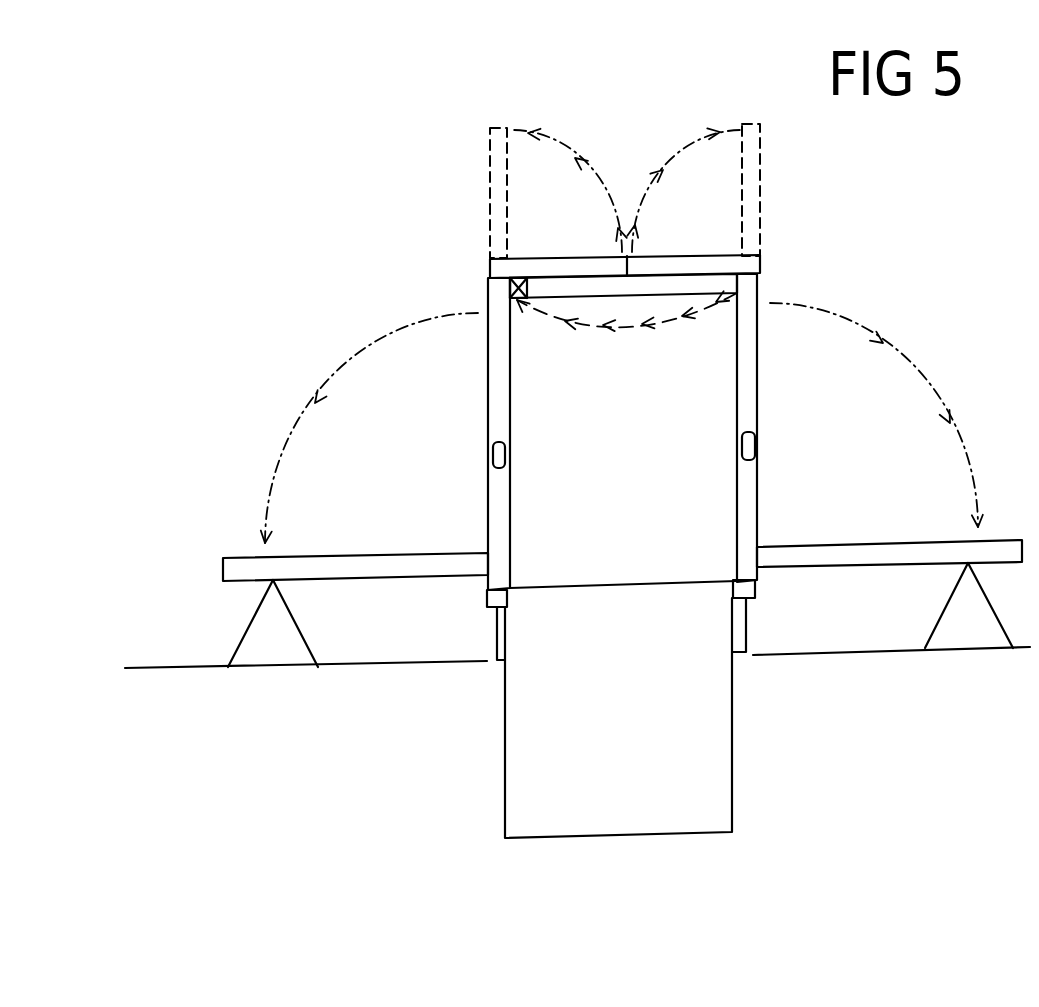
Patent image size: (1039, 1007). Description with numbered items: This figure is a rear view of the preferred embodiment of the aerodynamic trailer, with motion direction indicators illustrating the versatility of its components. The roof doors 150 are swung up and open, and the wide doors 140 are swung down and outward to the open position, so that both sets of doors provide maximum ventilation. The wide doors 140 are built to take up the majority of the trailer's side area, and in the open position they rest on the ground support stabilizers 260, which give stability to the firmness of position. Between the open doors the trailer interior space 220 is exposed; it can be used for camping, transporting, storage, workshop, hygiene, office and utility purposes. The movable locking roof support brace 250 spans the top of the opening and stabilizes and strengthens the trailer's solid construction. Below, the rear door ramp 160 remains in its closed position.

The wide door 140 is at (846, 537).
The roof door 150 is at (485, 178).
The rear door ramp 160 is at (742, 740).
The trailer interior space 220 is at (482, 392).
The movable locking roof support brace 250 is at (690, 229).
The ground support stabilizers 260 is at (581, 553).